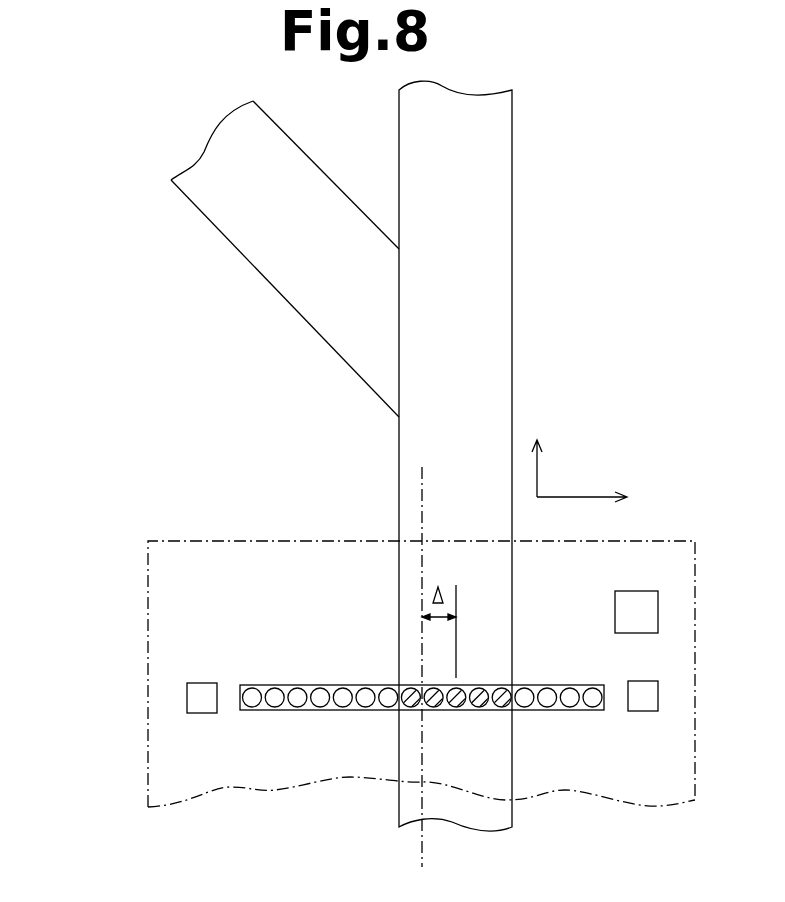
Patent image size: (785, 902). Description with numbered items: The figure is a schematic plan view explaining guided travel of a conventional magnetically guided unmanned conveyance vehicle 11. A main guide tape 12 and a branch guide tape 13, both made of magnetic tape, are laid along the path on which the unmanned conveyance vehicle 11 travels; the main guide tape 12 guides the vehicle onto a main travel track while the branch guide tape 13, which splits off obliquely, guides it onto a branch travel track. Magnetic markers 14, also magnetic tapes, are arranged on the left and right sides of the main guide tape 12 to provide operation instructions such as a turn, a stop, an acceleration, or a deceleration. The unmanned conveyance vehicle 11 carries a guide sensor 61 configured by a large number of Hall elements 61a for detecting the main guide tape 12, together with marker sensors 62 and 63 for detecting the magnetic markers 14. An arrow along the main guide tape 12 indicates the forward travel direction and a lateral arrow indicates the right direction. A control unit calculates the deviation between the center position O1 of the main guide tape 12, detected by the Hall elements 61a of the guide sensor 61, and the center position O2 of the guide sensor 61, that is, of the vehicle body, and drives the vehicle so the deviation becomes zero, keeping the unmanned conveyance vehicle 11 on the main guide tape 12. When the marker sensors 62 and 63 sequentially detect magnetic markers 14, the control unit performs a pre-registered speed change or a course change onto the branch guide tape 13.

The magnetically guided unmanned conveyance vehicle 11 is at (148, 603).
The main guide tape 12 is at (399, 155).
The branch guide tape 13 is at (208, 207).
The magnetic marker 14 is at (647, 613).
The guide sensor 61 is at (422, 669).
The Hall elements 61a is at (479, 688).
The marker sensor 62 is at (195, 697).
The marker sensor 63 is at (648, 695).
The center position of the main guide tape O1 is at (456, 645).
The center position of the guide sensor O2 is at (422, 647).